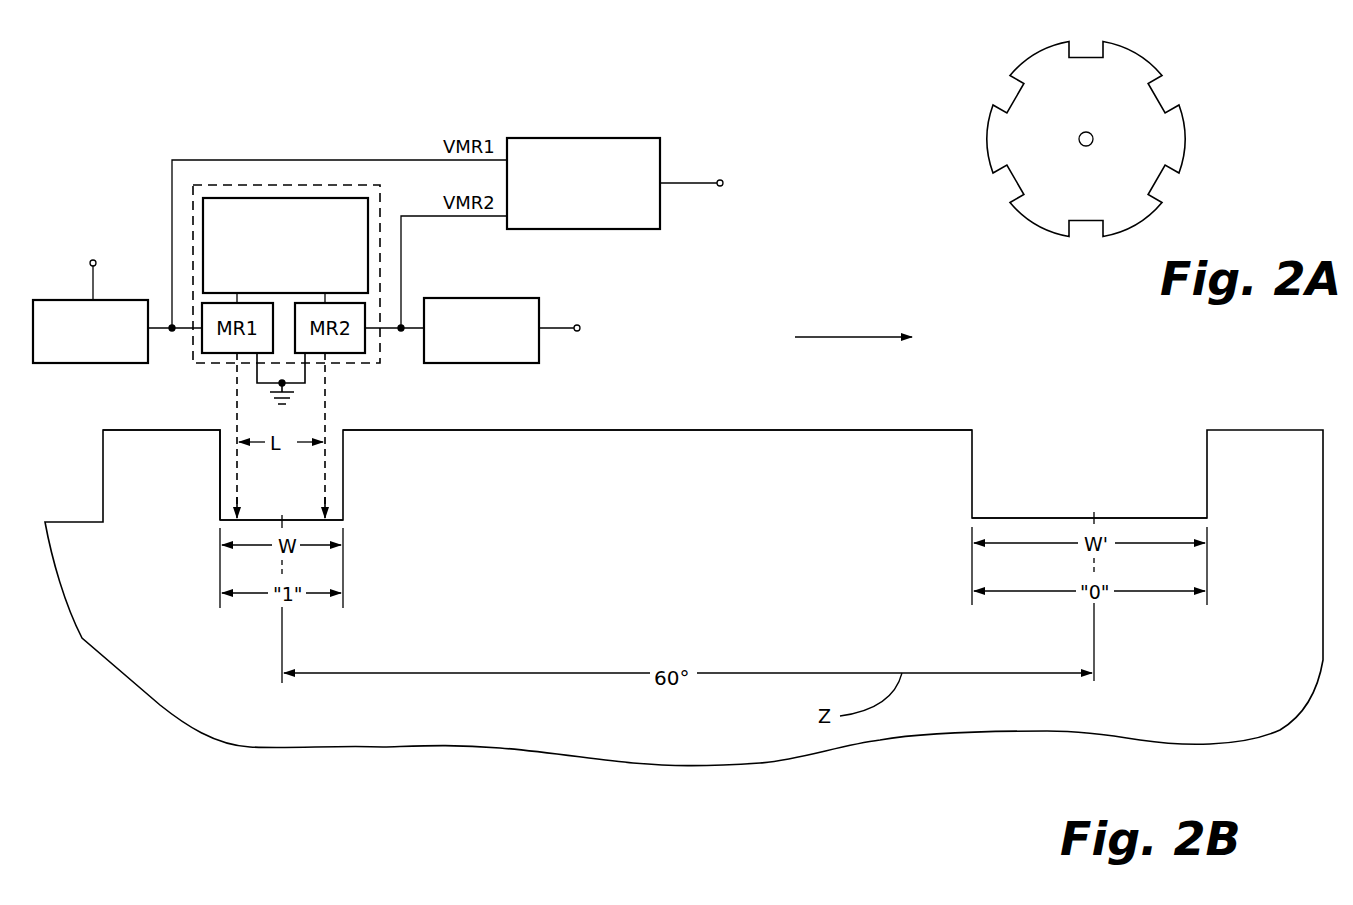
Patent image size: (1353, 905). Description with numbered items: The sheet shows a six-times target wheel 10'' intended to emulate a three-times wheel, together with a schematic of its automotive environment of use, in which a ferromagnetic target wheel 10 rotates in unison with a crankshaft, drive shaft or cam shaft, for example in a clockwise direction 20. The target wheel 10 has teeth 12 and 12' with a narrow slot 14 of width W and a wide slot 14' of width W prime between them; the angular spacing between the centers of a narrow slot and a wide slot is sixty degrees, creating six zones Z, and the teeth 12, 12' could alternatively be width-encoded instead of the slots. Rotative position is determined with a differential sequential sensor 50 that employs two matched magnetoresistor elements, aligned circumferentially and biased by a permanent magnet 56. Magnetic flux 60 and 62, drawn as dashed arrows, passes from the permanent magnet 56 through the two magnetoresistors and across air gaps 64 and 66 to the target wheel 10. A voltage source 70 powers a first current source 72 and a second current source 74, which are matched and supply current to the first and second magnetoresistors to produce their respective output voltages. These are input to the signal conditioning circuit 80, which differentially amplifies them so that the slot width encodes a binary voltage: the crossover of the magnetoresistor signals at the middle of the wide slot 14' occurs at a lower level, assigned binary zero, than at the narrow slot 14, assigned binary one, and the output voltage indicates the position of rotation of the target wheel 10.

In FIG. 2B, the target wheel 10 is at (684, 635).
In FIG. 2A, the 6X target wheel 10'' is at (1040, 139).
In FIG. 2B, the tooth 12 is at (673, 431).
In FIG. 2B, the tooth 12' is at (657, 392).
In FIG. 2B, the narrow slot 14 is at (281, 487).
In FIG. 2B, the wide slot 14' is at (1089, 459).
In FIG. 2A, the clockwise direction 20 is at (845, 337).
In FIG. 2B, the differential sequential sensor 50 is at (363, 185).
In FIG. 2B, the permanent magnet 56 is at (228, 198).
In FIG. 2B, the magnetic flux 60 is at (237, 300).
In FIG. 2B, the magnetic flux 62 is at (380, 290).
In FIG. 2B, the air gap 64 is at (237, 396).
In FIG. 2B, the air gap 66 is at (325, 396).
In FIG. 2B, the voltage source 70 is at (90, 278).
In FIG. 2B, the current source 1 72 is at (31, 356).
In FIG. 2B, the current source 2 74 is at (512, 363).
In FIG. 2B, the signal conditioning circuit 80 is at (633, 138).